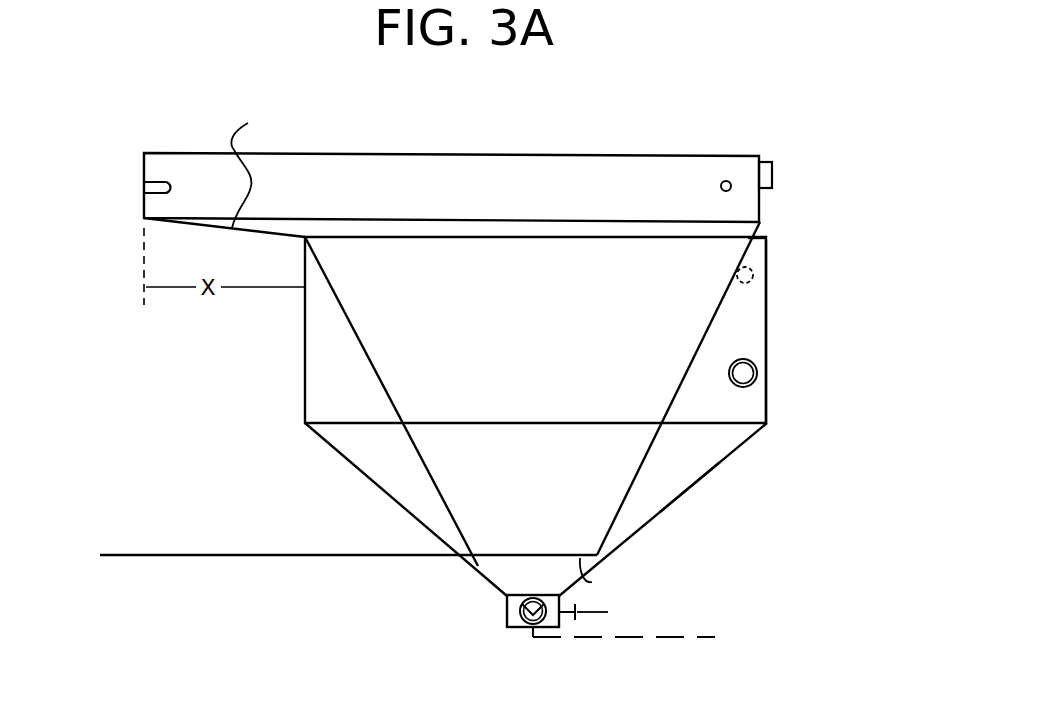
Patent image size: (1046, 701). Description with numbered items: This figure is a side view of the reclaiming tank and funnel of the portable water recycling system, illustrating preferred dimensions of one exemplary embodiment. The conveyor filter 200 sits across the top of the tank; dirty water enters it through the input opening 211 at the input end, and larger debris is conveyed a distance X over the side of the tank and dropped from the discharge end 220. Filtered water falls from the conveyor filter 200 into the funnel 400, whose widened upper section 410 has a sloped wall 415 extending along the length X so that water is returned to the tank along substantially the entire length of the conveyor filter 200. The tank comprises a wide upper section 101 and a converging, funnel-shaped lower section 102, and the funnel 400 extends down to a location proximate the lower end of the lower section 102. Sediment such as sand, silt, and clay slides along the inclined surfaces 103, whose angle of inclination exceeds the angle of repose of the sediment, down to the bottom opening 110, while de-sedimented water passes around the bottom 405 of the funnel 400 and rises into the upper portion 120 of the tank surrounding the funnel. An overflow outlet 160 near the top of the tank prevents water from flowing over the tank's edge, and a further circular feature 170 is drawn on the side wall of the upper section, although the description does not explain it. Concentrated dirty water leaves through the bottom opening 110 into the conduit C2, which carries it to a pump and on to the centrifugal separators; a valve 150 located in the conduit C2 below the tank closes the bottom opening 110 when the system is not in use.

The conveyor filter 200 is at (728, 144).
The discharge end 220 is at (118, 176).
The sloped wall 415 is at (263, 163).
The input opening 211 is at (773, 168).
The widened upper section 410 is at (746, 238).
The overflow outlet 160 is at (752, 263).
The funnel 400 is at (725, 305).
The upper portion 120 is at (743, 330).
The fill port 170 is at (750, 370).
The upper section 101 is at (868, 240).
The lower section 102 is at (777, 423).
The inclined surfaces 103 is at (677, 497).
The bottom 405 is at (592, 582).
The conduit C2 is at (652, 637).
The bottom opening 110 is at (494, 616).
The valve 150 is at (608, 612).